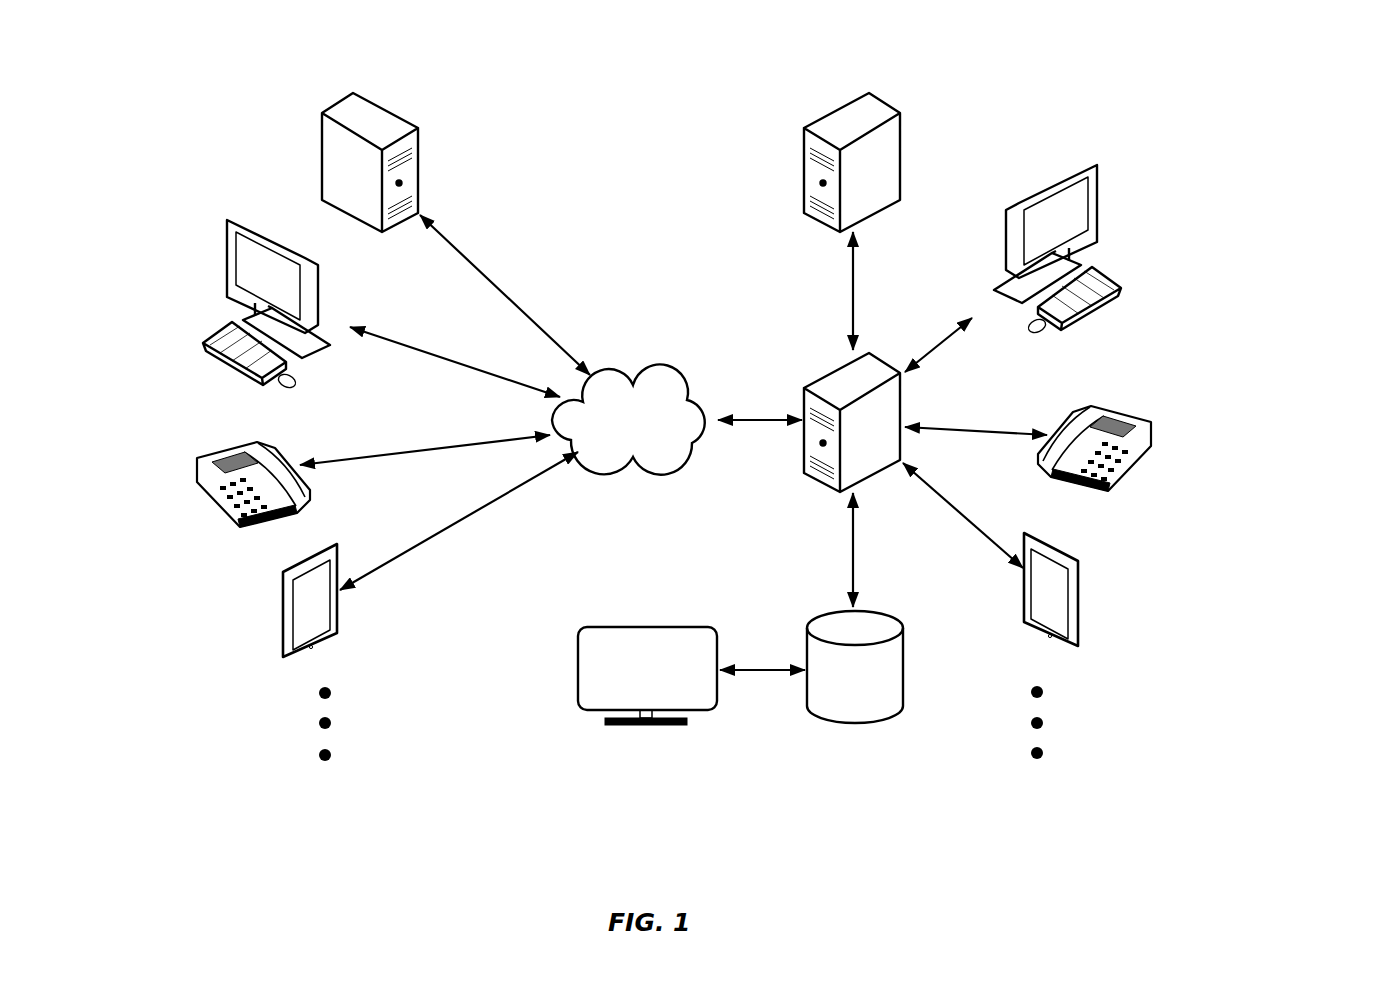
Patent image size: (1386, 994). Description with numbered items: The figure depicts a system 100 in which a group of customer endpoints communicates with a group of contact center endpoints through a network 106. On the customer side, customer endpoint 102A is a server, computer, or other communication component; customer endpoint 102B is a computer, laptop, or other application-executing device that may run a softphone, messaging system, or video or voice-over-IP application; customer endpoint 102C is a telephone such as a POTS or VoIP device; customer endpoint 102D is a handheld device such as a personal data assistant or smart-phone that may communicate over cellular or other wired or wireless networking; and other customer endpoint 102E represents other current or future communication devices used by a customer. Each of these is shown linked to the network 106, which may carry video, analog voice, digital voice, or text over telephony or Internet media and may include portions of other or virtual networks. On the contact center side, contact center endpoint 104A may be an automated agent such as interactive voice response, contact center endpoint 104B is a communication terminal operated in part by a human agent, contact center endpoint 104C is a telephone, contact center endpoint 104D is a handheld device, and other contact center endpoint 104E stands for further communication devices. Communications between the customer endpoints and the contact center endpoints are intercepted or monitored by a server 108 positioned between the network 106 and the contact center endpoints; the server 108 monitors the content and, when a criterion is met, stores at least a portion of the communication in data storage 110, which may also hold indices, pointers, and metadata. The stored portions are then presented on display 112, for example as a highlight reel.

The system 100 is at (1290, 60).
The customer endpoint 102A is at (418, 160).
The customer endpoint 102B is at (240, 215).
The customer endpoint 102C is at (196, 462).
The customer endpoint 102D is at (294, 578).
The other customer endpoint 102E is at (322, 722).
The contact center endpoint 104A is at (902, 160).
The contact center endpoint 104B is at (1098, 205).
The contact center endpoint 104C is at (1153, 432).
The contact center endpoint 104D is at (1080, 560).
The other contact center endpoint 104E is at (1043, 722).
The network 106 is at (655, 375).
The server 108 is at (852, 443).
The data storage 110 is at (839, 695).
The display 112 is at (629, 680).